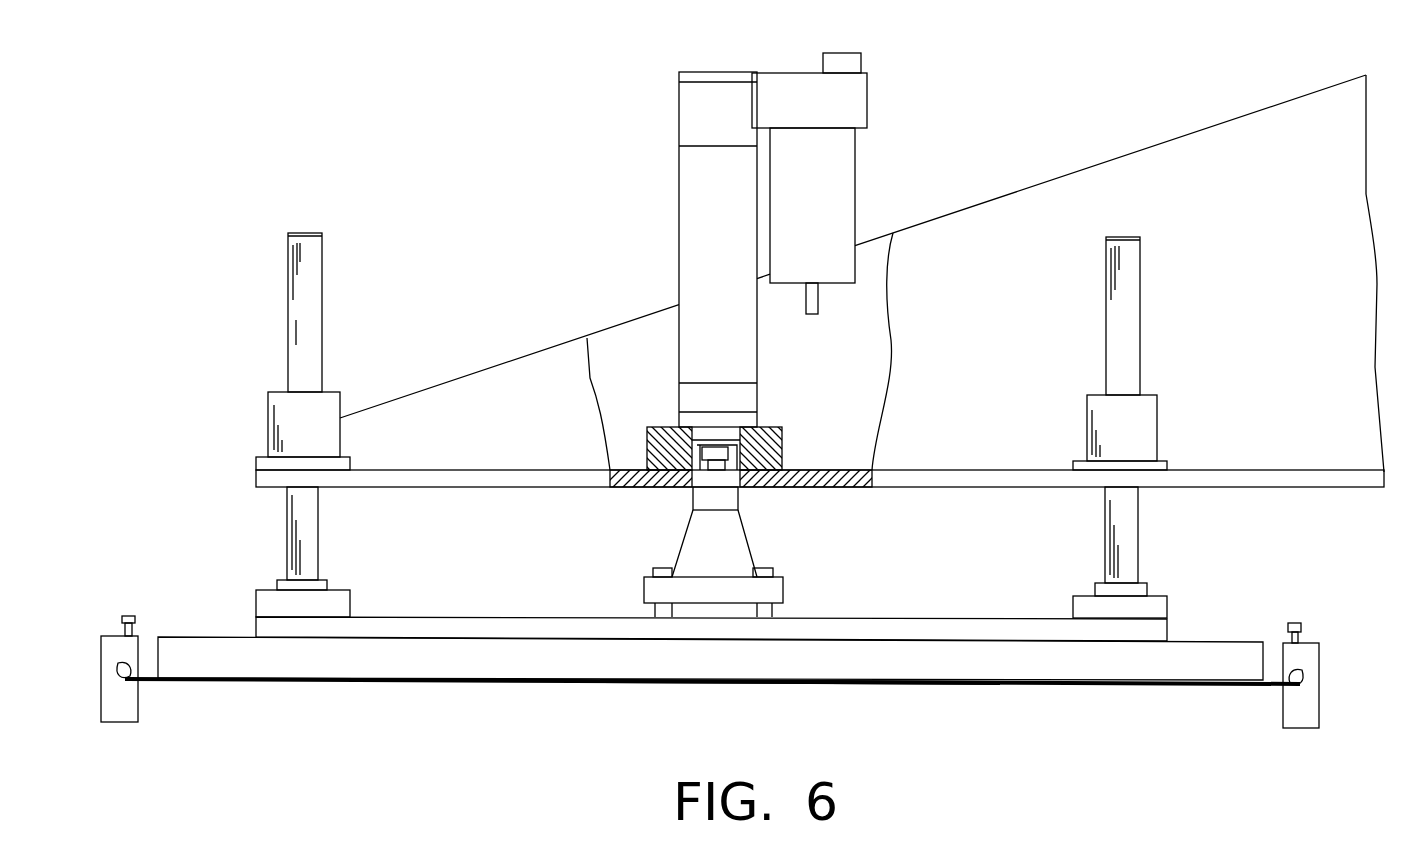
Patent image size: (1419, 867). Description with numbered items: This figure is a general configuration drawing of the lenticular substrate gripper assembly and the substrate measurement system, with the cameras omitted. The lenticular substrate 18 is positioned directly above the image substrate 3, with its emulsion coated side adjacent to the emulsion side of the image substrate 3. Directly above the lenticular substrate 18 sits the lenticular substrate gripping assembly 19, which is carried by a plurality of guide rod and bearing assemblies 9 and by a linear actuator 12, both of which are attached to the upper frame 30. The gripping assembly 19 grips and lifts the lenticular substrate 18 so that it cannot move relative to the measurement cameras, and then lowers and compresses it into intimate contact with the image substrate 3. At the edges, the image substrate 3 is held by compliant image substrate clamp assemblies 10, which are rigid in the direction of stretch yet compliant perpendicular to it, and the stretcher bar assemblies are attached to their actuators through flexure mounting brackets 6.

The image substrate 3 is at (1123, 686).
The flexure mounting bracket 6 is at (960, 676).
The guide rod and bearing assembly 9 is at (258, 547).
The compliant image substrate clamp assembly 10 is at (108, 592).
The linear actuator 12 is at (679, 108).
The lenticular substrate 18 is at (808, 667).
The lenticular substrate gripping assembly 19 is at (1217, 642).
The upper frame 30 is at (508, 362).